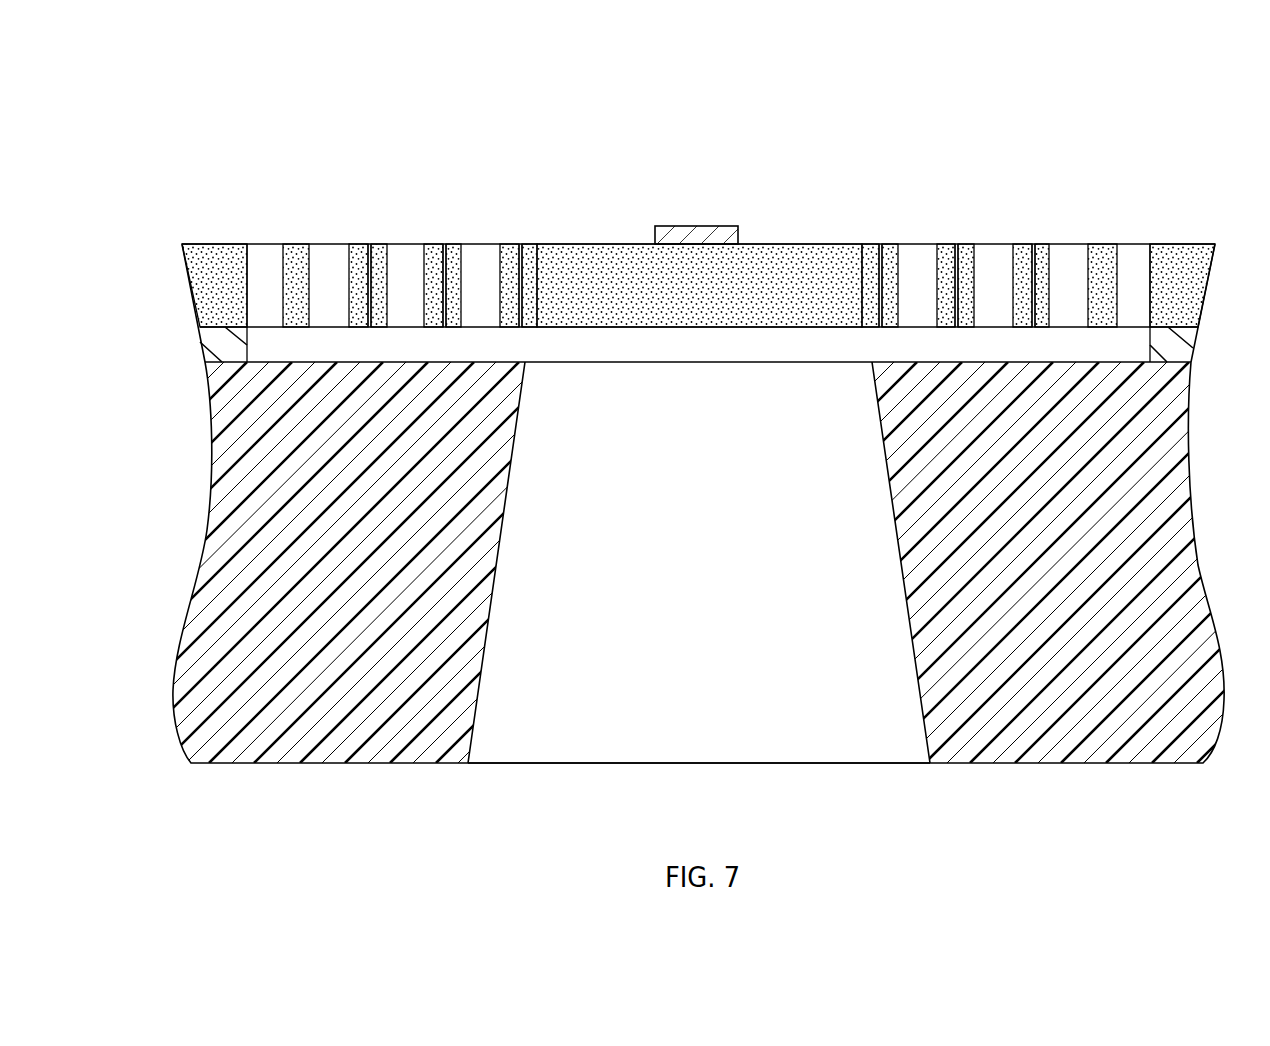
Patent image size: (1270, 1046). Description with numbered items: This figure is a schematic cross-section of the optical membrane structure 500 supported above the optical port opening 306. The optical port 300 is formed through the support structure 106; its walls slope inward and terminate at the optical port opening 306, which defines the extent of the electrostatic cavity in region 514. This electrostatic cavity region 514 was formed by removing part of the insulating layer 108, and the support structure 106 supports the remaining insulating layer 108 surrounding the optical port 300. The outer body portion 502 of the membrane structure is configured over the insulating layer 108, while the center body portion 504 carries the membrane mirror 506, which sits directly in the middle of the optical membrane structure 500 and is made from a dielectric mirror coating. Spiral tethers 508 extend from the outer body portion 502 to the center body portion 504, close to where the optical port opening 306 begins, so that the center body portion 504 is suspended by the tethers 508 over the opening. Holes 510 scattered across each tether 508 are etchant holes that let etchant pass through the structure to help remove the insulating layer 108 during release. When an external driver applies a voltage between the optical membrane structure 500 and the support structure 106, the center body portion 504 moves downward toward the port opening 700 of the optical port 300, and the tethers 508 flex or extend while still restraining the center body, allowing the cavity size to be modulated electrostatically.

The optical membrane structure 500 is at (960, 98).
The outer body portion 502 is at (203, 253).
The center body portion 504 is at (553, 258).
The membrane mirror 506 is at (670, 239).
The tethers 508 is at (296, 258).
The holes 510 is at (958, 258).
The insulating layer 108 is at (1183, 325).
The electrostatic cavity region 514 is at (1127, 352).
The port opening 700 is at (1100, 362).
The support structure 106 is at (1143, 466).
The optical port opening 306 is at (527, 363).
The optical port 300 is at (855, 737).